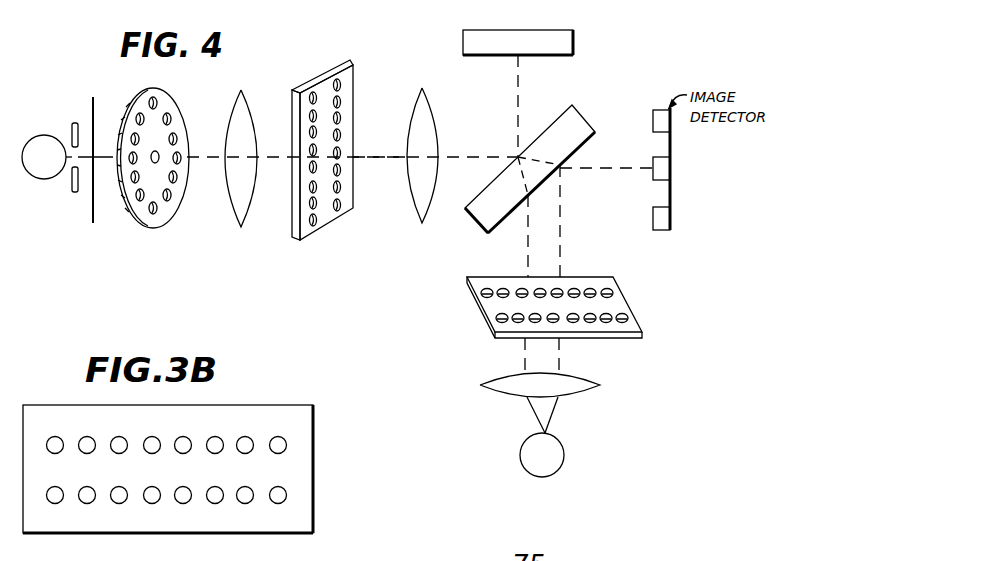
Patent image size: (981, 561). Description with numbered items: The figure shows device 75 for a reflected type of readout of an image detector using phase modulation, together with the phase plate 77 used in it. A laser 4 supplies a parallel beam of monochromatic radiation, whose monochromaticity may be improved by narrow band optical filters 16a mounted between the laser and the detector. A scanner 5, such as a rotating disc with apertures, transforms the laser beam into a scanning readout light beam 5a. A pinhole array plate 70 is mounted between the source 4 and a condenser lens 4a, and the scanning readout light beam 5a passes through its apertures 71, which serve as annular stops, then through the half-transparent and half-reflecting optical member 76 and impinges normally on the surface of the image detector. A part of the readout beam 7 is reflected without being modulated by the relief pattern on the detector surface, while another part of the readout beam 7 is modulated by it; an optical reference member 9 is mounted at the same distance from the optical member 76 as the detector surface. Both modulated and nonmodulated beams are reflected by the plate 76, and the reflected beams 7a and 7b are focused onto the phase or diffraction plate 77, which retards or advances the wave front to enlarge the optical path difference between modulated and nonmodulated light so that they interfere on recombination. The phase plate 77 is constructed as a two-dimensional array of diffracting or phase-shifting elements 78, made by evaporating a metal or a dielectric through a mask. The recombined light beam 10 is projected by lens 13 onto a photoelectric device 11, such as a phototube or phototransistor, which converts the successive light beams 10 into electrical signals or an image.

In FIG. 4, the laser 4 is at (42, 174).
In FIG. 4, the narrow band optical filters 16a is at (93, 110).
In FIG. 4, the scanner 5 is at (154, 222).
In FIG. 4, the device for reflected type of readout 75 is at (358, 158).
In FIG. 4, the pinhole array plate 70 is at (305, 240).
In FIG. 4, the apertures 71 is at (337, 208).
In FIG. 4, the scanning readout light beam 5a is at (387, 158).
In FIG. 4, the condenser lens 4a is at (422, 212).
In FIG. 4, the optical reference member 9 is at (573, 44).
In FIG. 4, the half-transparent and half-reflecting optical member 76 is at (575, 106).
In FIG. 4, the readout beam 7 is at (602, 170).
In FIG. 4, the reflected beam 7a is at (560, 262).
In FIG. 4, the reflected beam 7b is at (527, 267).
In FIG. 4, the phase or diffraction plate 77 is at (562, 304).
In FIG. 3B, the phase or diffraction plate 77 is at (323, 405).
In FIG. 4, the diffracting or phase-shifting elements 78 is at (604, 293).
In FIG. 3B, the diffracting or phase-shifting elements 78 is at (283, 494).
In FIG. 4, the lens 13 is at (597, 383).
In FIG. 4, the recombined light beam 10 is at (532, 417).
In FIG. 4, the photoelectric device 11 is at (553, 457).